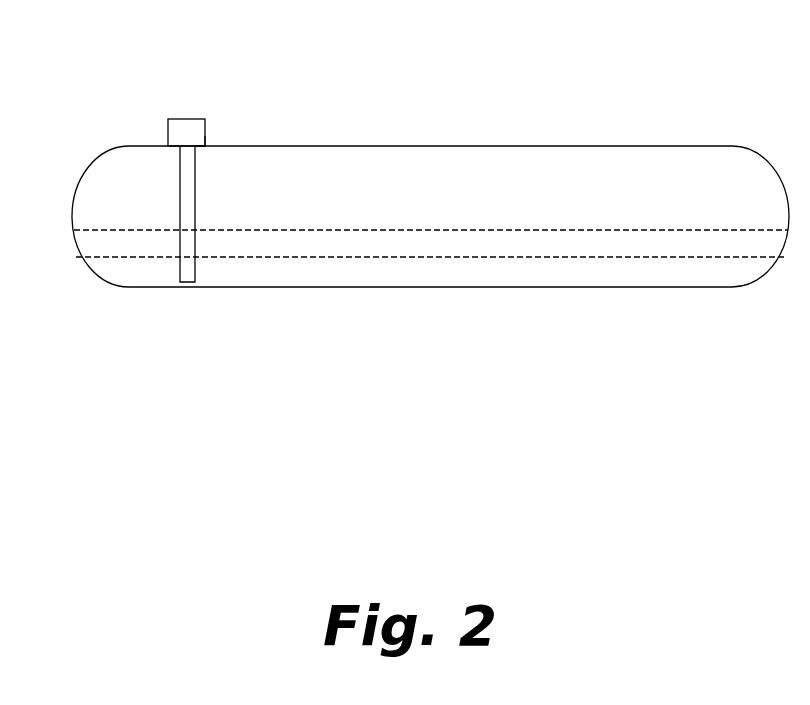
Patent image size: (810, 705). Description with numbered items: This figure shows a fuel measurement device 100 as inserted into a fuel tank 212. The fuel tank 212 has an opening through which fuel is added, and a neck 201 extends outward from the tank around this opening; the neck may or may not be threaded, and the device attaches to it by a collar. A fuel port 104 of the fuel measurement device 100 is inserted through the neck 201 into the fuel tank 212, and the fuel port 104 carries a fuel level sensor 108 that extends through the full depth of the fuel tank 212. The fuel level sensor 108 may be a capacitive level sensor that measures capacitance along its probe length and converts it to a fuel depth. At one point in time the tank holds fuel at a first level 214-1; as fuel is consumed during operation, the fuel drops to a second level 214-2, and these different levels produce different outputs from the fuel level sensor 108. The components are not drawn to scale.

The fuel measurement device 100 is at (413, 180).
The fuel port 104 is at (197, 132).
The fuel level sensor 108 is at (188, 273).
The neck 201 is at (203, 145).
The fuel tank 212 is at (455, 160).
The first level 214-1 is at (678, 228).
The second level 214-2 is at (625, 258).